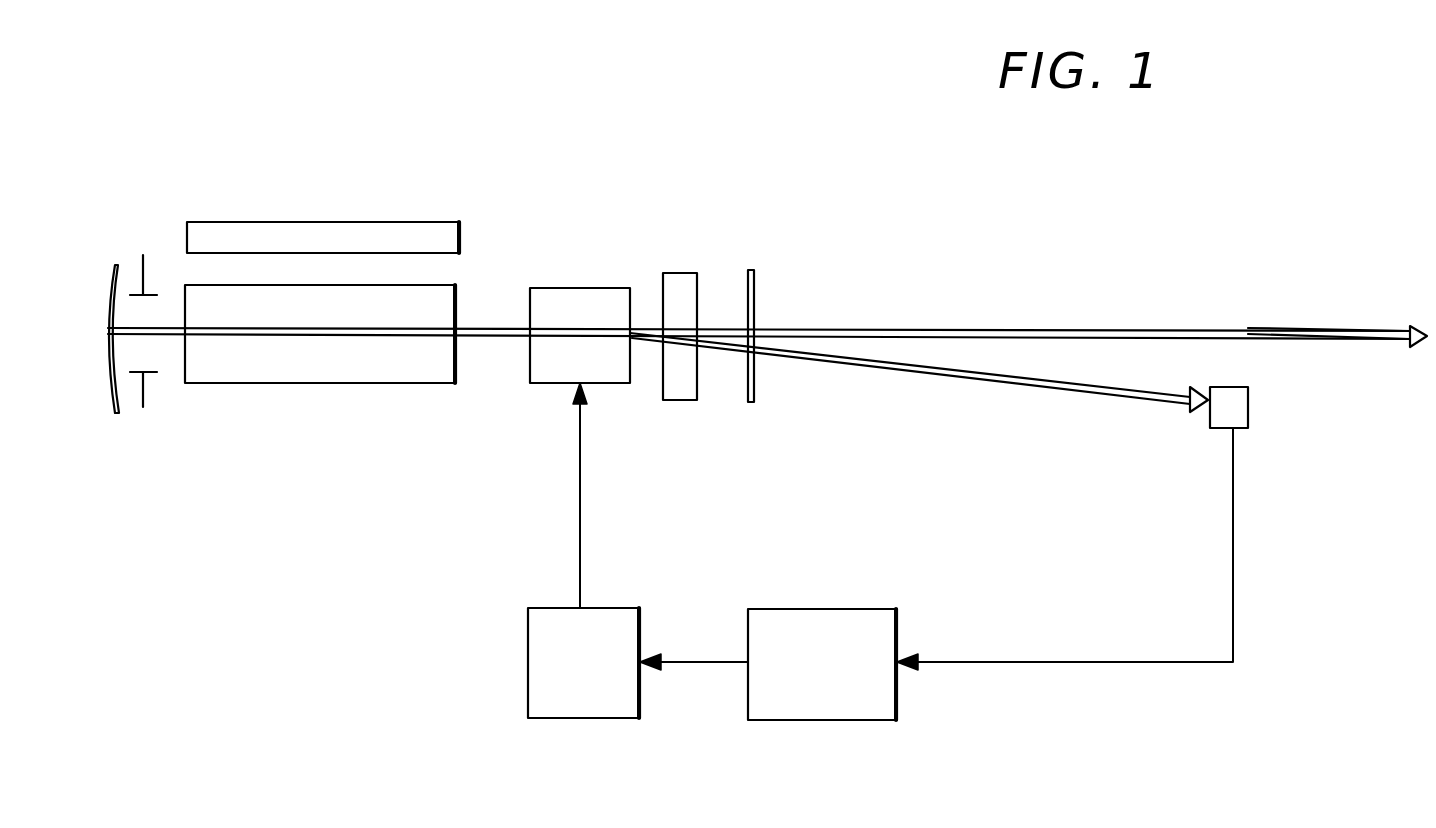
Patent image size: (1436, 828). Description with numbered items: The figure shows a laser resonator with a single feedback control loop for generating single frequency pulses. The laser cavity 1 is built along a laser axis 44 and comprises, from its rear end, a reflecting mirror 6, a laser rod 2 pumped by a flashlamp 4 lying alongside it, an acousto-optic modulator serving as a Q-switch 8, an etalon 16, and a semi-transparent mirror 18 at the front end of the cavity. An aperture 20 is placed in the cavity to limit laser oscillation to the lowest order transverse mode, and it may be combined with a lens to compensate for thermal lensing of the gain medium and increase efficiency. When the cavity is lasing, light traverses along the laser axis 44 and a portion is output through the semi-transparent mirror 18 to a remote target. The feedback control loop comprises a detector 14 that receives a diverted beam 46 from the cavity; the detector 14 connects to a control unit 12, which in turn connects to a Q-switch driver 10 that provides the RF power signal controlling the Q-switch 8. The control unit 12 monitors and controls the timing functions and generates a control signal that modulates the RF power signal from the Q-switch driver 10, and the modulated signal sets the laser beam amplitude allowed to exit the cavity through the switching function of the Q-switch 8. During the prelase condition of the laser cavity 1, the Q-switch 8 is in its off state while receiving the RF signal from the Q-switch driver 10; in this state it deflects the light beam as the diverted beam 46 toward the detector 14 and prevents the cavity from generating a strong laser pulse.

The laser cavity 1 is at (858, 242).
The laser rod 2 is at (400, 370).
The flashlamp 4 is at (305, 235).
The reflecting mirror 6 is at (107, 378).
The Q-switch 8 is at (577, 295).
The Q-switch driver 10 is at (548, 668).
The control unit 12 is at (813, 625).
The detector 14 is at (1250, 404).
The etalon 16 is at (680, 283).
The semi-transparent mirror 18 is at (752, 298).
The aperture 20 is at (147, 380).
The laser axis 44 is at (1007, 329).
The diverted beam 46 is at (951, 373).